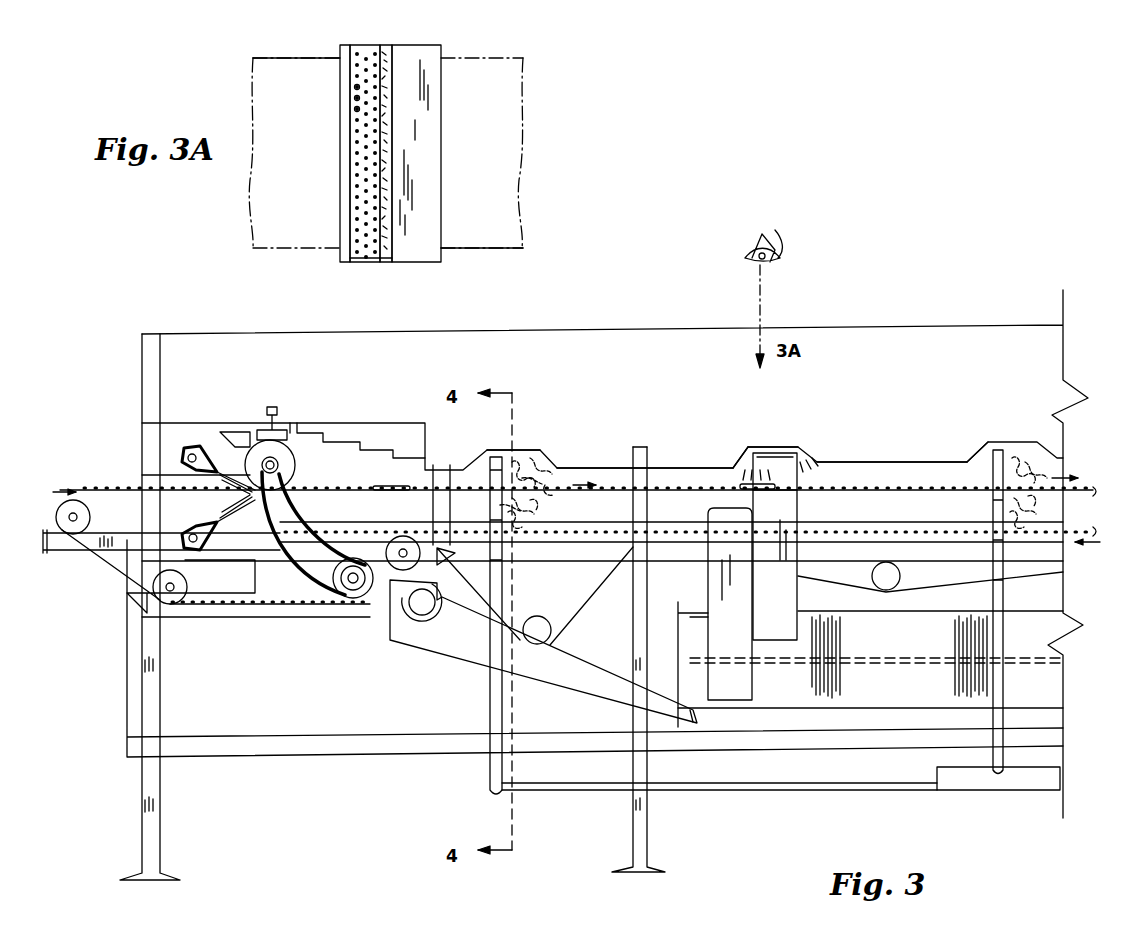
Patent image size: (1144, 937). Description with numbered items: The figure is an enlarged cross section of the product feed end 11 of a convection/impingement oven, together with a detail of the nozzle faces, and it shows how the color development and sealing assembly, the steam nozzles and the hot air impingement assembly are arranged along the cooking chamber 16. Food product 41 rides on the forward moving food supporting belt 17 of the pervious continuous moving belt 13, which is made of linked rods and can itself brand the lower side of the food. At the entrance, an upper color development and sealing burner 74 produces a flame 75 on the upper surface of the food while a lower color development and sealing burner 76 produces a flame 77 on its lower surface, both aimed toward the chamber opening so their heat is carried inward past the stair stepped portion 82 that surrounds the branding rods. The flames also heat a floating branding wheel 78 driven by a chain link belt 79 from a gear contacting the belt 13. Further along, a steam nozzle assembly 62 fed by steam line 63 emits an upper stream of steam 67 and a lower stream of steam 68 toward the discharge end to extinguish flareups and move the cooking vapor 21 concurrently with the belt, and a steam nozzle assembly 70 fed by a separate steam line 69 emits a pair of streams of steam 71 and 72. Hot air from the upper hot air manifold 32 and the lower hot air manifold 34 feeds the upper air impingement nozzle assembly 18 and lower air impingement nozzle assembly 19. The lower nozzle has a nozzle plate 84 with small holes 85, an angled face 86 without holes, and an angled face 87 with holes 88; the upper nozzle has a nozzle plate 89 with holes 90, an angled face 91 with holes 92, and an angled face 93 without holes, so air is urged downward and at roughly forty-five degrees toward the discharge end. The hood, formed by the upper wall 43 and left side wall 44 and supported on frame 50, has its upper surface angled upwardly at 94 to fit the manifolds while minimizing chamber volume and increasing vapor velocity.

In FIG. 3, the product feed end 11 is at (132, 490).
In FIG. 3, the continuous moving belt 13 is at (225, 617).
In FIG. 3, the cooking chamber 16 is at (618, 466).
In FIG. 3A, the food supporting belt 17 is at (280, 56).
In FIG. 3, the food supporting belt 17 is at (118, 492).
In FIG. 3A, the upper air impingement nozzle assembly 18 is at (432, 136).
In FIG. 3, the upper air impingement nozzle assembly 18 is at (765, 452).
In FIG. 3A, the lower air impingement nozzle assembly 19 is at (356, 144).
In FIG. 3, the lower air impingement nozzle assembly 19 is at (712, 500).
In FIG. 3, the cooking vapor 21 is at (918, 468).
In FIG. 3, the upper hot air manifold 32 is at (1075, 636).
In FIG. 3, the lower hot air manifold 34 is at (1075, 699).
In FIG. 3, the food product 41 is at (382, 486).
In FIG. 3, the upper wall of the cooking chamber 43 is at (875, 462).
In FIG. 3, the left side wall 44 is at (522, 450).
In FIG. 3, the frame 50 is at (62, 553).
In FIG. 3, the steam nozzle assembly 62 is at (496, 455).
In FIG. 3, the steam line 63 is at (598, 792).
In FIG. 3, the upper stream of steam 67 is at (538, 470).
In FIG. 3, the lower stream of steam 68 is at (540, 502).
In FIG. 3, the steam line 69 is at (1040, 792).
In FIG. 3, the steam nozzle assembly 70 is at (999, 450).
In FIG. 3, the stream of steam 71 is at (1028, 470).
In FIG. 3, the stream of steam 72 is at (1030, 500).
In FIG. 3, the upper color development and sealing burner 74 is at (194, 448).
In FIG. 3, the flame 75 is at (232, 478).
In FIG. 3, the lower color development and sealing burner 76 is at (208, 545).
In FIG. 3, the flame 77 is at (320, 555).
In FIG. 3, the branding wheel 78 is at (292, 455).
In FIG. 3, the chain link belt 79 is at (320, 516).
In FIG. 3, the stair stepped portion 82 is at (372, 425).
In FIG. 3A, the nozzle plate 84 is at (368, 258).
In FIG. 3A, the holes 85 is at (357, 109).
In FIG. 3A, the angled face 86 is at (342, 52).
In FIG. 3A, the angled face 87 is at (386, 52).
In FIG. 3A, the holes 88 is at (390, 240).
In FIG. 3A, the nozzle plate 89 is at (482, 267).
In FIG. 3, the nozzle plate 89 is at (792, 488).
In FIG. 3, the holes 90 is at (768, 470).
In FIG. 3, the angled face 91 is at (797, 450).
In FIG. 3, the holes 92 is at (808, 465).
In FIG. 3, the angled face 93 is at (745, 458).
In FIG. 3, the upwardly angled portion 94 is at (788, 446).